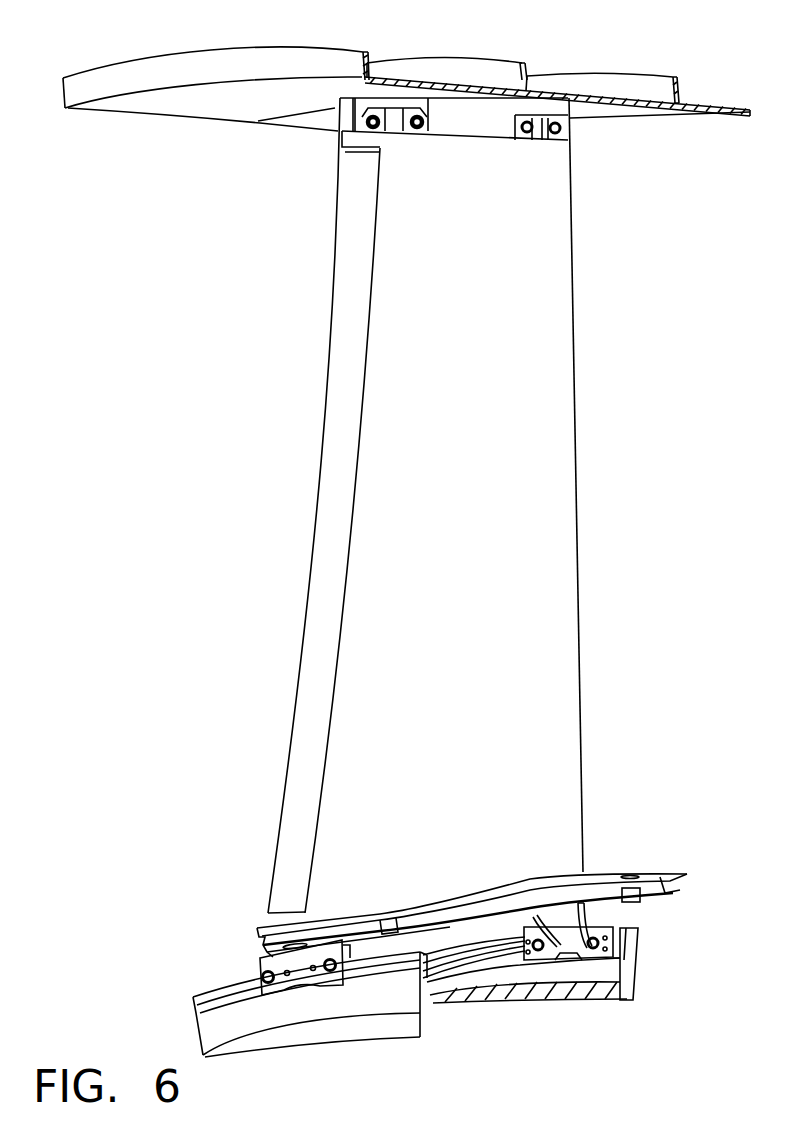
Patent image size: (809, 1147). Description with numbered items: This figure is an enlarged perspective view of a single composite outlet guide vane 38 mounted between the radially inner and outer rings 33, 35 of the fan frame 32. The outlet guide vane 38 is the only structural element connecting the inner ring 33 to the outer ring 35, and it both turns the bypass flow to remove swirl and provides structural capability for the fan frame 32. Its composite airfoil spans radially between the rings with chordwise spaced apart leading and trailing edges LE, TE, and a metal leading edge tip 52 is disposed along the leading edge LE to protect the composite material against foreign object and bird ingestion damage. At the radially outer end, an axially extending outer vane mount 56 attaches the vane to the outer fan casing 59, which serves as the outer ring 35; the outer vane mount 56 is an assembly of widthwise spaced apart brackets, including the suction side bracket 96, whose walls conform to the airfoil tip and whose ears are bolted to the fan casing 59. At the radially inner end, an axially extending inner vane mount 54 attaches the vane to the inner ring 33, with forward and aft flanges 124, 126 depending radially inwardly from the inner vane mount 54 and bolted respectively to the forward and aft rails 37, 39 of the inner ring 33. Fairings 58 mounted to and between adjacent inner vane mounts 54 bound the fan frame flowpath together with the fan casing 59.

The fan frame 32 is at (174, 676).
The inner ring 33 is at (528, 1002).
The outer ring 35 is at (427, 78).
The forward rail 37 is at (272, 58).
The outlet guide vane 38 is at (471, 485).
The aft rail 39 is at (675, 84).
The metal leading edge tip 52 is at (333, 337).
The inner vane mount 54 is at (568, 910).
The outer vane mount 56 is at (494, 132).
The fairing 58 is at (610, 872).
The outer fan casing 59 is at (483, 95).
The suction side bracket 96 is at (441, 118).
The forward flange 124 is at (265, 960).
The aft flange 126 is at (610, 921).
The leading edge LE is at (337, 135).
The trailing edge TE is at (572, 193).